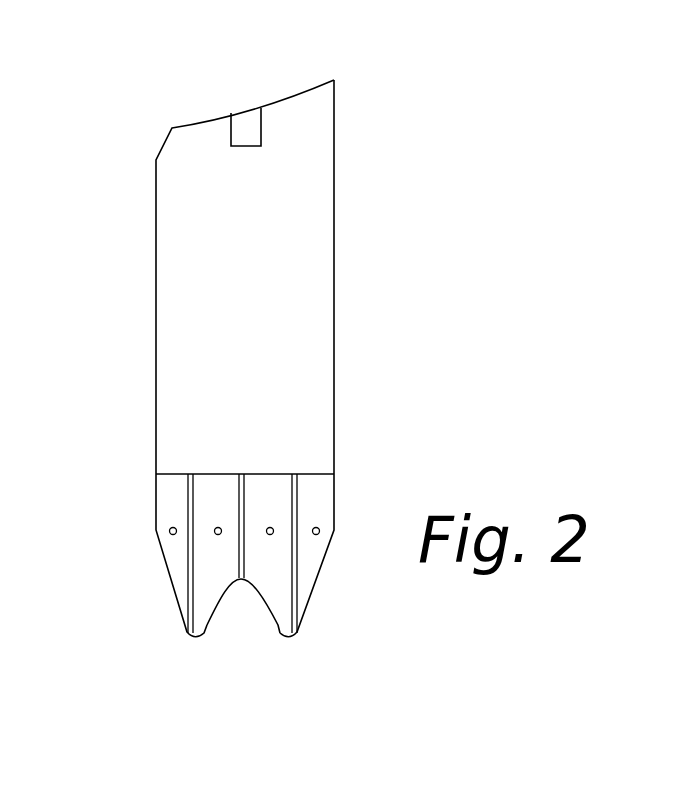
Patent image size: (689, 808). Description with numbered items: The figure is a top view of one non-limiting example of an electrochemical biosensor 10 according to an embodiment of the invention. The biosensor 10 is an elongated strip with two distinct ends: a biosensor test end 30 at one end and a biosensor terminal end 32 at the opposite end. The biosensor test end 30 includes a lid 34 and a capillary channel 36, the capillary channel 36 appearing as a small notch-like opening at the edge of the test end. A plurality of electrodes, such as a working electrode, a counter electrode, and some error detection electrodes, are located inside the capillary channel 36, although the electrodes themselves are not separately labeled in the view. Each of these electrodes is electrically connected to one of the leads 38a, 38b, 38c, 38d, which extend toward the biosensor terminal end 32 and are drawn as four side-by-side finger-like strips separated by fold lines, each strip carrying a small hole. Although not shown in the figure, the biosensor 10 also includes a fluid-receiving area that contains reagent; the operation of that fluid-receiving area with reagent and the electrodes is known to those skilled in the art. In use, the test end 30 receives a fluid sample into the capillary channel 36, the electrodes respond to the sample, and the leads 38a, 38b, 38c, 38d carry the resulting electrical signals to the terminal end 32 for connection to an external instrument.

The biosensor 10 is at (370, 309).
The biosensor test end 30 is at (137, 128).
The biosensor terminal end 32 is at (358, 568).
The lid 34 is at (320, 388).
The capillary channel 36 is at (238, 94).
The lead 38a is at (303, 593).
The lead 38b is at (283, 640).
The lead 38c is at (203, 640).
The lead 38d is at (178, 573).